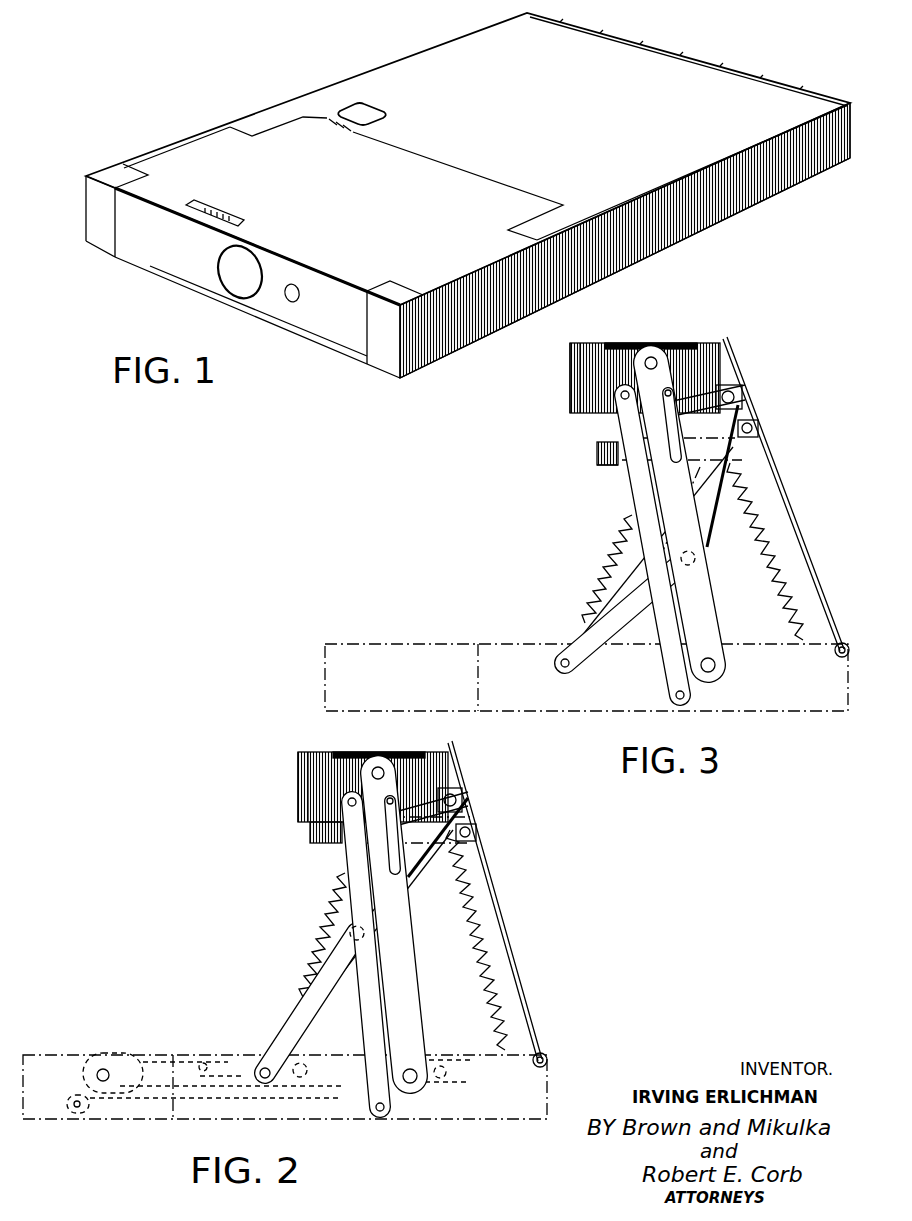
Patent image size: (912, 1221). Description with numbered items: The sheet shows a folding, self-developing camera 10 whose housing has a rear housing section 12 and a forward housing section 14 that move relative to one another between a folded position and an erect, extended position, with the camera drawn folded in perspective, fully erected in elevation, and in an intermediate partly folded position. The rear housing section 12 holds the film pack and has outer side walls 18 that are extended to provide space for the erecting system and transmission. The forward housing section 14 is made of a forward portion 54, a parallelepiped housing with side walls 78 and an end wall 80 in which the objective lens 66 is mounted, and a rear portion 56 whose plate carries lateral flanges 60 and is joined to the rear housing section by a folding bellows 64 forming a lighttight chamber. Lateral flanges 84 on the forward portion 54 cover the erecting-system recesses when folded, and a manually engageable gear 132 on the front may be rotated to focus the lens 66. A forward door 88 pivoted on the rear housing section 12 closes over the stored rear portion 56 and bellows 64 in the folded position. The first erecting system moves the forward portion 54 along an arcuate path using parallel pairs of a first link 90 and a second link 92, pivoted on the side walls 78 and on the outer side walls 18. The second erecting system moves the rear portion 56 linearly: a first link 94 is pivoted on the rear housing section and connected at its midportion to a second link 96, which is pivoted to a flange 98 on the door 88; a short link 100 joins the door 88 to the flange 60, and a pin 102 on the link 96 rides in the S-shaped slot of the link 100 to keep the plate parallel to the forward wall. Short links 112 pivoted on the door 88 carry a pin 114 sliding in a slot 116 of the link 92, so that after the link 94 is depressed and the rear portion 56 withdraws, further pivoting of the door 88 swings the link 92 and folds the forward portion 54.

In FIG. 1, the camera 10 is at (340, 74).
In FIG. 1, the rear housing section 12 is at (708, 228).
In FIG. 3, the rear housing section 12 is at (603, 701).
In FIG. 2, the rear housing section 12 is at (406, 1112).
In FIG. 2, the forward housing section 14 is at (292, 791).
In FIG. 1, the outer side walls 18 is at (622, 271).
In FIG. 1, the forward portion 54 is at (293, 313).
In FIG. 3, the forward portion 54 is at (569, 381).
In FIG. 2, the forward portion 54 is at (45, 1052).
In FIG. 3, the rear portion 56 is at (597, 456).
In FIG. 2, the rear portion 56 is at (438, 1053).
In FIG. 3, the lateral flanges 60 is at (616, 465).
In FIG. 2, the lateral flanges 60 is at (317, 833).
In FIG. 3, the folding bellows 64 is at (616, 552).
In FIG. 2, the folding bellows 64 is at (330, 905).
In FIG. 1, the objective lens 66 is at (232, 275).
In FIG. 3, the side walls 78 is at (578, 355).
In FIG. 2, the side walls 78 is at (317, 772).
In FIG. 1, the end wall 80 is at (162, 268).
In FIG. 1, the lateral flanges 84 is at (168, 152).
In FIG. 1, the forward door 88 is at (696, 45).
In FIG. 3, the forward door 88 is at (803, 532).
In FIG. 2, the forward door 88 is at (508, 929).
In FIG. 3, the first link 90 is at (658, 632).
In FIG. 2, the first link 90 is at (362, 986).
In FIG. 3, the second link 92 is at (711, 600).
In FIG. 2, the second link 92 is at (414, 967).
In FIG. 3, the first link 94 is at (618, 611).
In FIG. 2, the first link 94 is at (307, 997).
In FIG. 3, the second link 96 is at (719, 513).
In FIG. 2, the second link 96 is at (409, 878).
In FIG. 3, the flange 98 is at (744, 396).
In FIG. 2, the flange 98 is at (468, 799).
In FIG. 3, the short link 100 is at (690, 392).
In FIG. 2, the short link 100 is at (421, 780).
In FIG. 3, the pin 102 is at (751, 440).
In FIG. 2, the pin 102 is at (463, 850).
In FIG. 3, the short links 112 is at (705, 397).
In FIG. 2, the short links 112 is at (432, 792).
In FIG. 3, the pin 114 is at (632, 346).
In FIG. 2, the pin 114 is at (413, 758).
In FIG. 3, the slot 116 is at (700, 433).
In FIG. 2, the slot 116 is at (390, 852).
In FIG. 1, the manually engageable gear 132 is at (218, 208).